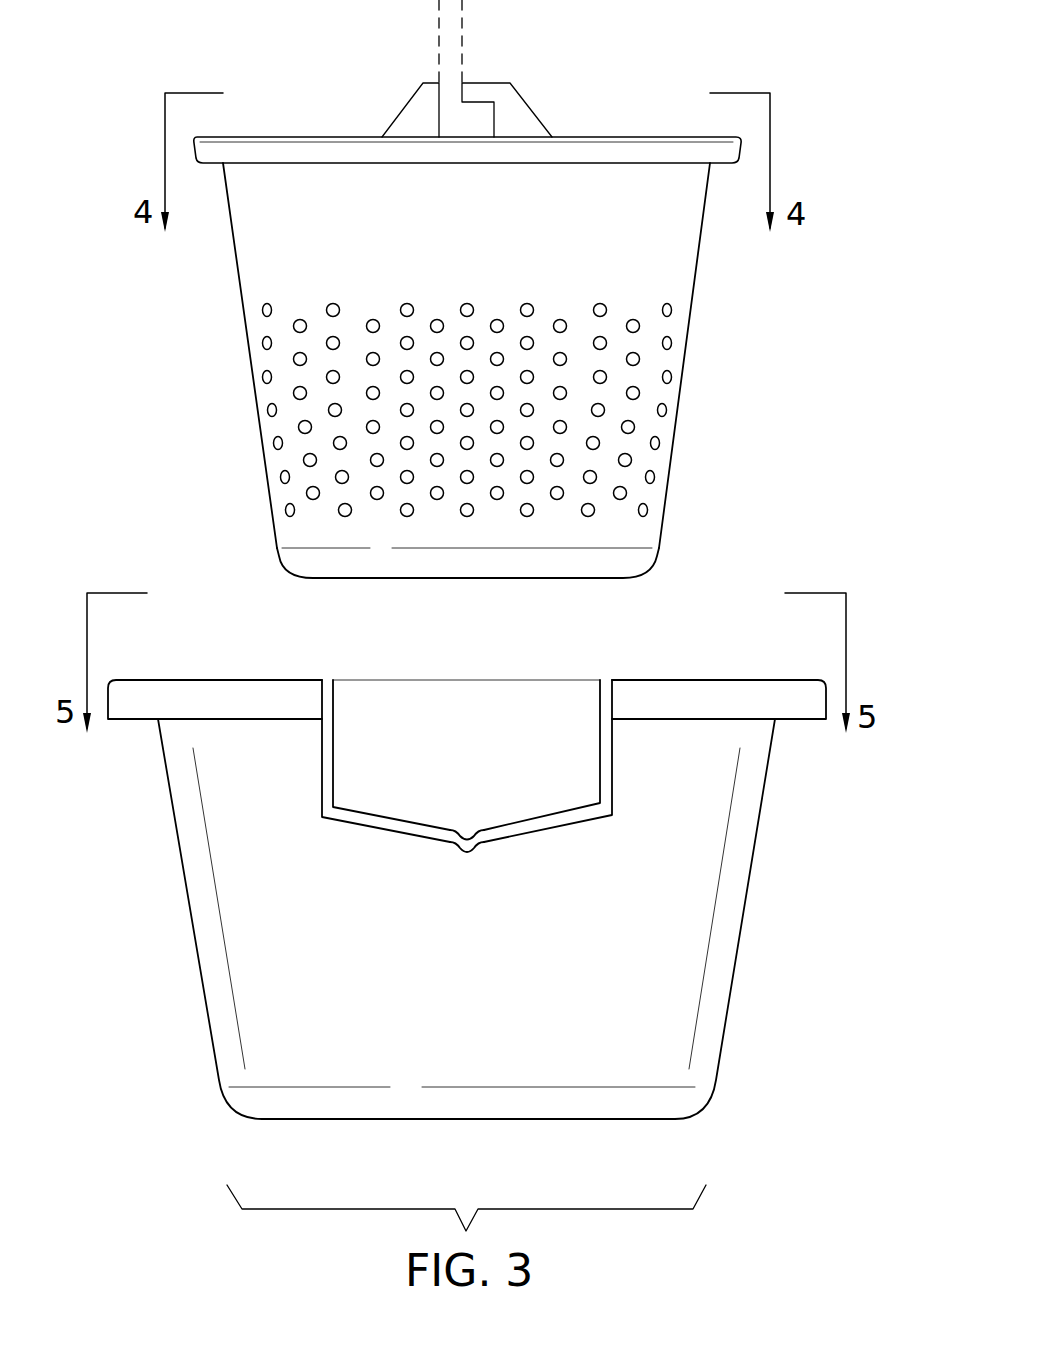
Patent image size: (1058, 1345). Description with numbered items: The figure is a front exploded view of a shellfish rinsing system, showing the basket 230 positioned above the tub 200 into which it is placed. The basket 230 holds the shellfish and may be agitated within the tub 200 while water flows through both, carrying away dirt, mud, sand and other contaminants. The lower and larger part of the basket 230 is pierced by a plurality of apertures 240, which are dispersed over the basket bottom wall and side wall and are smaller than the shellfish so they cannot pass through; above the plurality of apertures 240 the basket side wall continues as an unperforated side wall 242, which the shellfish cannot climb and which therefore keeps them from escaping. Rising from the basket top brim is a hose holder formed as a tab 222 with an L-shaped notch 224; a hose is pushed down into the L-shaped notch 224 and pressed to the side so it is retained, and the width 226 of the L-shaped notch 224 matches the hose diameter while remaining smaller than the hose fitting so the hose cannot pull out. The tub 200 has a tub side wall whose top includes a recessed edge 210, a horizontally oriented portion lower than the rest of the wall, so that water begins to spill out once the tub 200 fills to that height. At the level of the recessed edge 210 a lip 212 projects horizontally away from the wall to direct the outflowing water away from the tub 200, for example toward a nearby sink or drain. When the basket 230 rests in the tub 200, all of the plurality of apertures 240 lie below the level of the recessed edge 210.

The tub 200 is at (509, 951).
The recessed edge 210 is at (387, 818).
The lip 212 is at (430, 840).
The tab 222 is at (402, 110).
The L-shaped notch 224 is at (494, 118).
The width 226 is at (355, 15).
The basket 230 is at (442, 294).
The plurality of apertures 240 is at (628, 427).
The unperforated side wall 242 is at (640, 263).